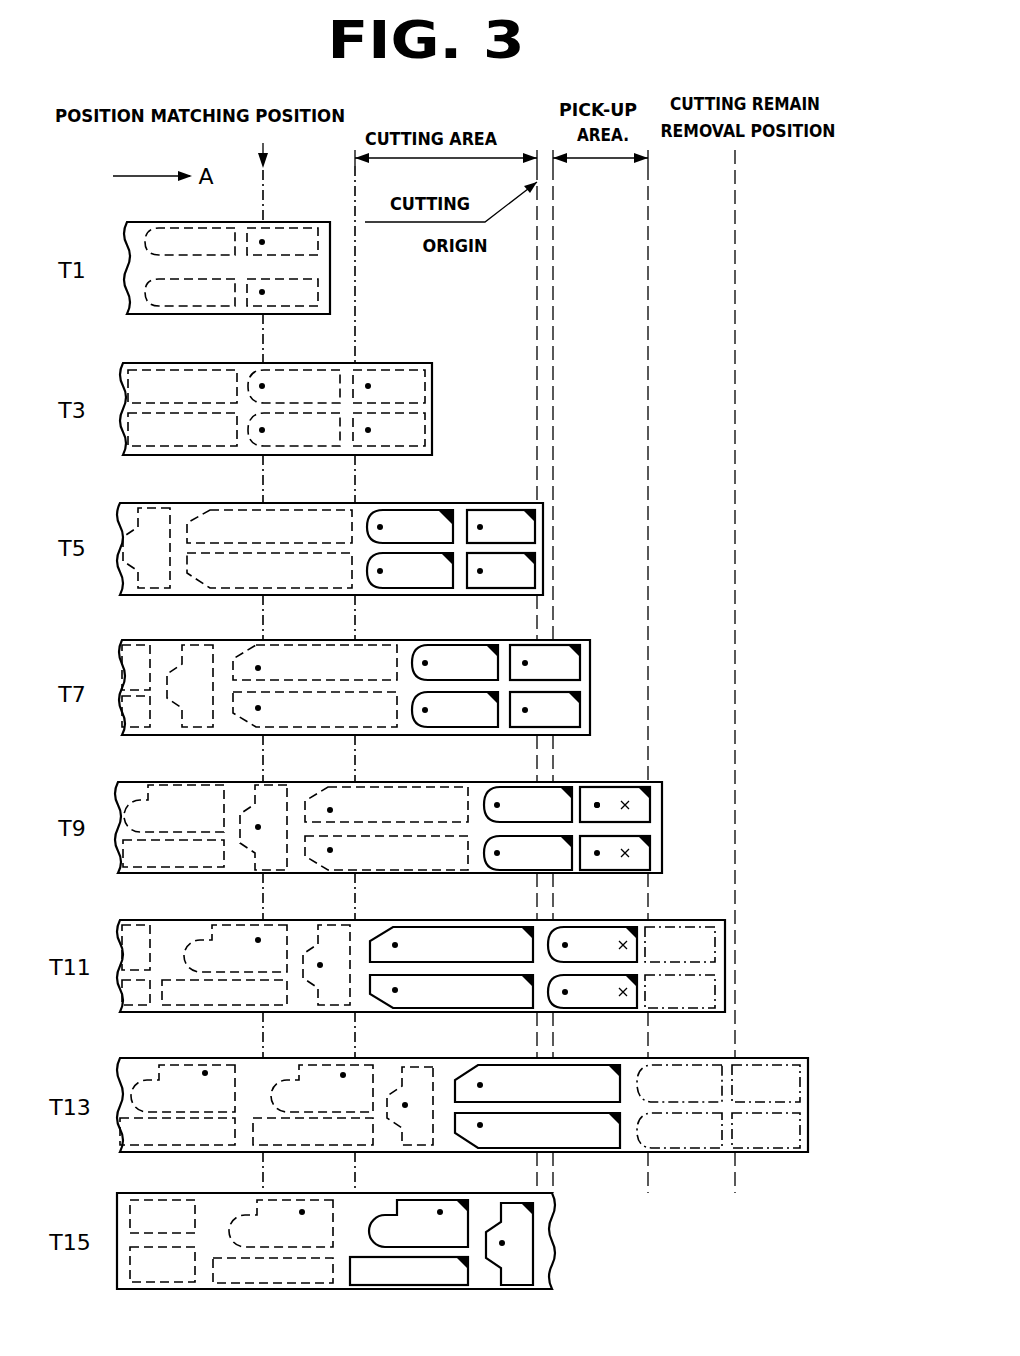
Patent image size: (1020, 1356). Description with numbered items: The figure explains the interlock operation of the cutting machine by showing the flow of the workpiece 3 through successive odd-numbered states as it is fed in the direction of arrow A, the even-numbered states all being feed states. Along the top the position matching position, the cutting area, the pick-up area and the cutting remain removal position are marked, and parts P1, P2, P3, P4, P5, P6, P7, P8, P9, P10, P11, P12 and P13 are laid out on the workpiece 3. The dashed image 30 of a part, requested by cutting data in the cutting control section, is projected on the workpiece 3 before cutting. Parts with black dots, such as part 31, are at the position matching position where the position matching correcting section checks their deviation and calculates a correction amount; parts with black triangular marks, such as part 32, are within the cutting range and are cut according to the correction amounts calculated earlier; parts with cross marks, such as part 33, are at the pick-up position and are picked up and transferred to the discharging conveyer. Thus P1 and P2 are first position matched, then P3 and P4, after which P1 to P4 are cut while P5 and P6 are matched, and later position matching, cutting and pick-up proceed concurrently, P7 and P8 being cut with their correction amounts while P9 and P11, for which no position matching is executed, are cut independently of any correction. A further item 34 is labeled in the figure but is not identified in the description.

The workpiece 3 is at (335, 283).
The image of a part 30 is at (180, 308).
The position-matched part 31 is at (262, 242).
The cut part 32 is at (450, 510).
The picked-up part 33 is at (630, 803).
The cutting remain 34 is at (780, 1075).
The part P1 is at (300, 228).
The part P2 is at (305, 308).
The part P3 is at (180, 228).
The part P4 is at (228, 308).
The part P5 is at (140, 362).
The part P6 is at (218, 447).
The part P7 is at (160, 503).
The part P8 is at (185, 785).
The part P9 is at (172, 875).
The part P10 is at (245, 1065).
The part P11 is at (215, 1153).
The part P12 is at (150, 1200).
The part P13 is at (180, 1289).